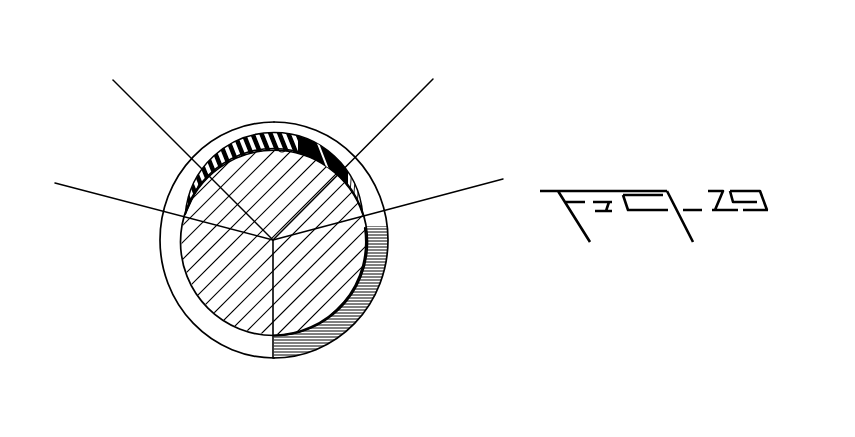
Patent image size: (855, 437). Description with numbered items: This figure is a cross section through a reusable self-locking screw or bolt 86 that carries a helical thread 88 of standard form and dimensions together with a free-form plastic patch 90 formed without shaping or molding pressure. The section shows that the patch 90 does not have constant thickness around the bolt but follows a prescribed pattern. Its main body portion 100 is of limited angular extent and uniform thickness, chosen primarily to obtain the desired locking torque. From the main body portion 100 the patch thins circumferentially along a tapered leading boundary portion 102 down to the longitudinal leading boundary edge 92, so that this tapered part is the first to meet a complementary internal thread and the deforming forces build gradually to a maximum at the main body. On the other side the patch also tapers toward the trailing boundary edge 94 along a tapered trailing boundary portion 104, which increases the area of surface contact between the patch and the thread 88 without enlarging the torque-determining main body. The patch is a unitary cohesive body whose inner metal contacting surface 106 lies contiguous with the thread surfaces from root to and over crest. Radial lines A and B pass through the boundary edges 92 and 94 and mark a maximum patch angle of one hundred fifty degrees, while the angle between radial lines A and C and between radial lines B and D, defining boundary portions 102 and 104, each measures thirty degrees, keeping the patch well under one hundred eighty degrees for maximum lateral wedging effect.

The self-locking screw or bolt 86 is at (283, 361).
The helical thread 88 is at (318, 285).
The plastic patch 90 is at (214, 134).
The leading boundary edge 92 is at (160, 231).
The trailing boundary edge 94 is at (388, 225).
The main body portion 100 is at (250, 133).
The tapered leading boundary portion 102 is at (186, 170).
The tapered trailing boundary portion 104 is at (358, 165).
The inner metal contacting surface 106 is at (298, 135).
The radial line A is at (73, 186).
The radial line B is at (501, 179).
The radial line C is at (117, 83).
The radial line D is at (433, 79).